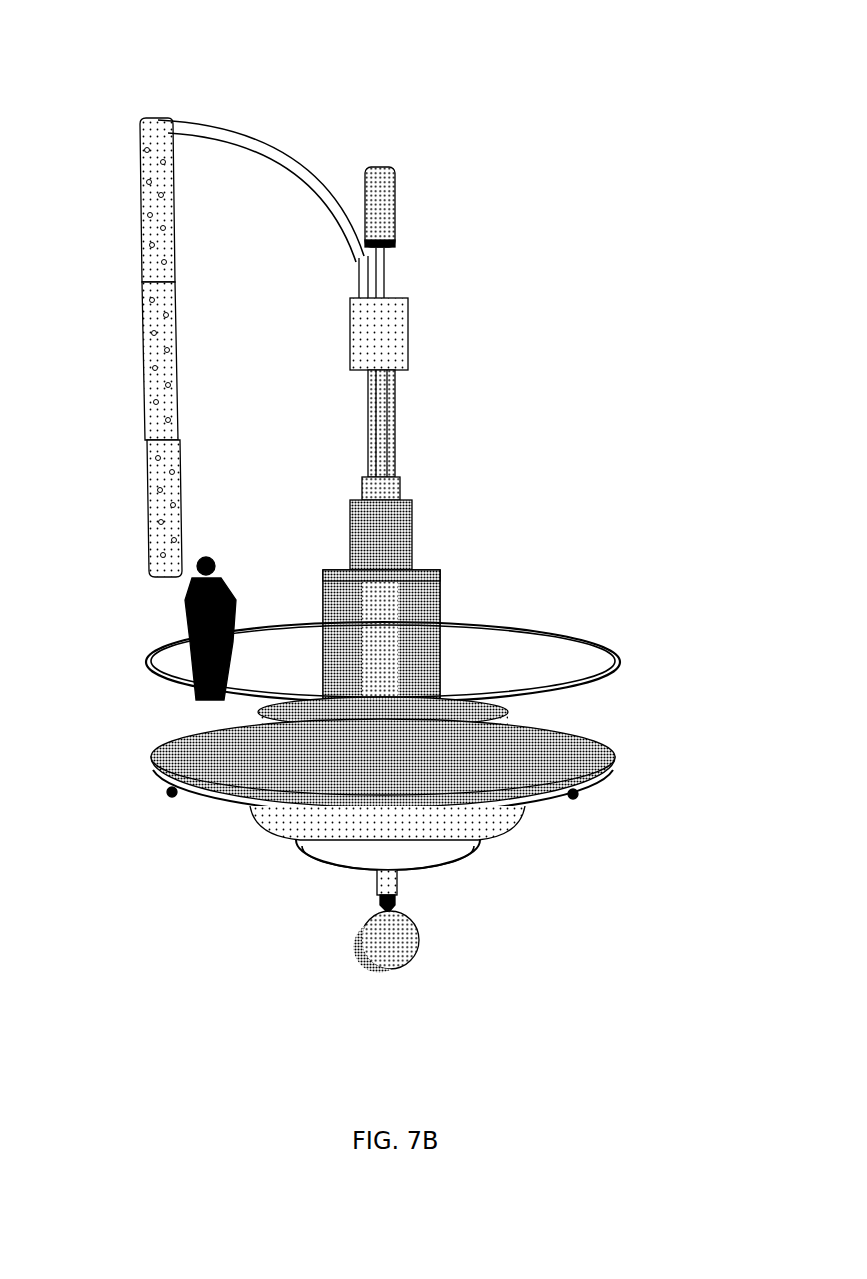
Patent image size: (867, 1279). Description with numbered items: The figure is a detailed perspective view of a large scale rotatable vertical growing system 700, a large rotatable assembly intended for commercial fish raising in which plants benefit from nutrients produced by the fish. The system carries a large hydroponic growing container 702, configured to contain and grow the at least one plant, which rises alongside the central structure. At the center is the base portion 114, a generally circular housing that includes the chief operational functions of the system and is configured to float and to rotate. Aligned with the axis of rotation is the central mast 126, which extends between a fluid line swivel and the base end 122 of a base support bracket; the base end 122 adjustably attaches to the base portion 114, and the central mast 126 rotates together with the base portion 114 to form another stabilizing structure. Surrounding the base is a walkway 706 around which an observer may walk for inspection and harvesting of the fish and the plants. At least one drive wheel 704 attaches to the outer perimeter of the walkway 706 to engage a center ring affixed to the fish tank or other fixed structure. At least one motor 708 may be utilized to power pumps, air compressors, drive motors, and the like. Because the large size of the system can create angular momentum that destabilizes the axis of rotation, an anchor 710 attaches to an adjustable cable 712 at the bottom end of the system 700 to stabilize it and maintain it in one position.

The large scale rotatable vertical growing system 700 is at (667, 90).
The large hydroponic growing container 702 is at (148, 467).
The drive wheel 704 is at (586, 798).
The walkway 706 is at (157, 771).
The motor 708 is at (373, 880).
The anchor 710 is at (432, 915).
The adjustable cable 712 is at (377, 907).
The base portion 114 is at (441, 607).
The base end 122 is at (506, 752).
The central mast 126 is at (403, 218).